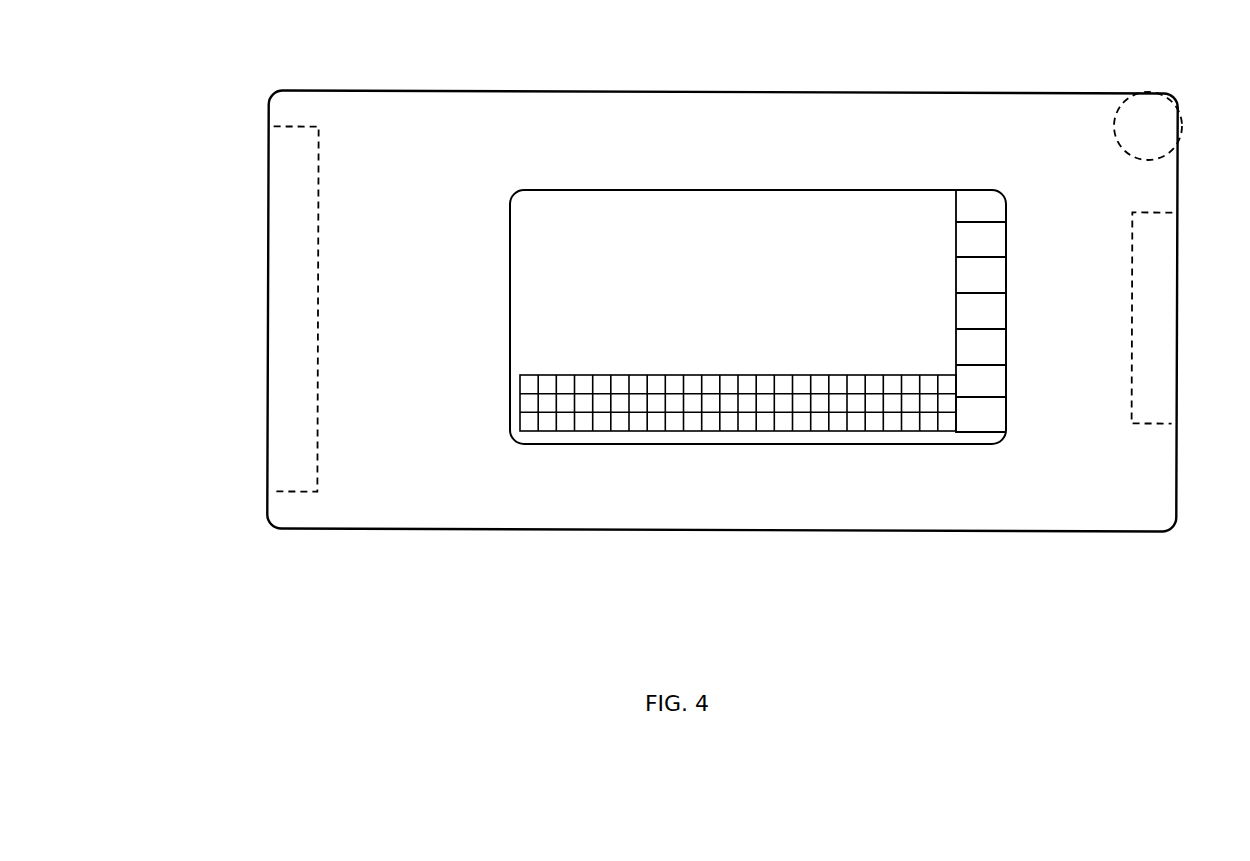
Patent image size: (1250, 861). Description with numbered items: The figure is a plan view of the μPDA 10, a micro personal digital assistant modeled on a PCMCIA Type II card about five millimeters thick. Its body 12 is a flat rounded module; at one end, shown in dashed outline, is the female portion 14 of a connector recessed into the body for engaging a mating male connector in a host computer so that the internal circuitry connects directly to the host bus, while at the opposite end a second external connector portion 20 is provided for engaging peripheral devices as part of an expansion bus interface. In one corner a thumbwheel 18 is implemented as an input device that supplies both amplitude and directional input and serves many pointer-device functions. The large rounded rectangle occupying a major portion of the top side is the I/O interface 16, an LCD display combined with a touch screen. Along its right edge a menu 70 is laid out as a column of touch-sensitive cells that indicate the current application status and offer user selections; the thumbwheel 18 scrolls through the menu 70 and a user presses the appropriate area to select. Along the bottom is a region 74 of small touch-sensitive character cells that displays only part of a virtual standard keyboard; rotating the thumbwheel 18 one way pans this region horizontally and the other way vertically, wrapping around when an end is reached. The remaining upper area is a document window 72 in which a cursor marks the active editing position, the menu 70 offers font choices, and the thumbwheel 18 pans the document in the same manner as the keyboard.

The μPDA 10 is at (364, 80).
The body 12 is at (522, 90).
The female portion of a connector 14 is at (270, 308).
The I/O interface 16 is at (636, 196).
The thumbwheel 18 is at (1147, 90).
The second external connector portion 20 is at (1173, 318).
The menu 70 is at (973, 200).
The document window 72 is at (785, 200).
The region 74 is at (530, 402).